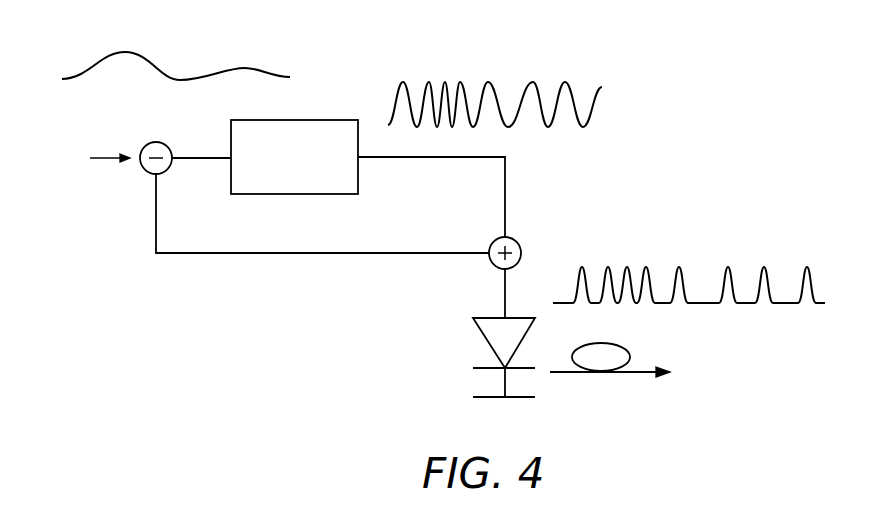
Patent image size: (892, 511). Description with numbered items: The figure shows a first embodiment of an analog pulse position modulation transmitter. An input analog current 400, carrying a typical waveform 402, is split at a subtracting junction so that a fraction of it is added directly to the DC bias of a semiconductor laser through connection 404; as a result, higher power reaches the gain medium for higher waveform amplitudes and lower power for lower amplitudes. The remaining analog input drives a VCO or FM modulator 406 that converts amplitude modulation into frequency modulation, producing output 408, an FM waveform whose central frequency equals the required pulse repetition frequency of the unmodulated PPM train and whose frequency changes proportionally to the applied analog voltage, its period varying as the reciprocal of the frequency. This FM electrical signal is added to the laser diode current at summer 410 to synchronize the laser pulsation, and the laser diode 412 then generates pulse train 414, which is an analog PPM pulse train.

The input analog current 400 is at (107, 158).
The waveform 402 is at (262, 68).
The connection 404 is at (330, 255).
The FM modulator 406 is at (280, 118).
The output 408 is at (533, 80).
The summer 410 is at (515, 239).
The laser diode 412 is at (475, 328).
The pulse train 414 is at (679, 268).